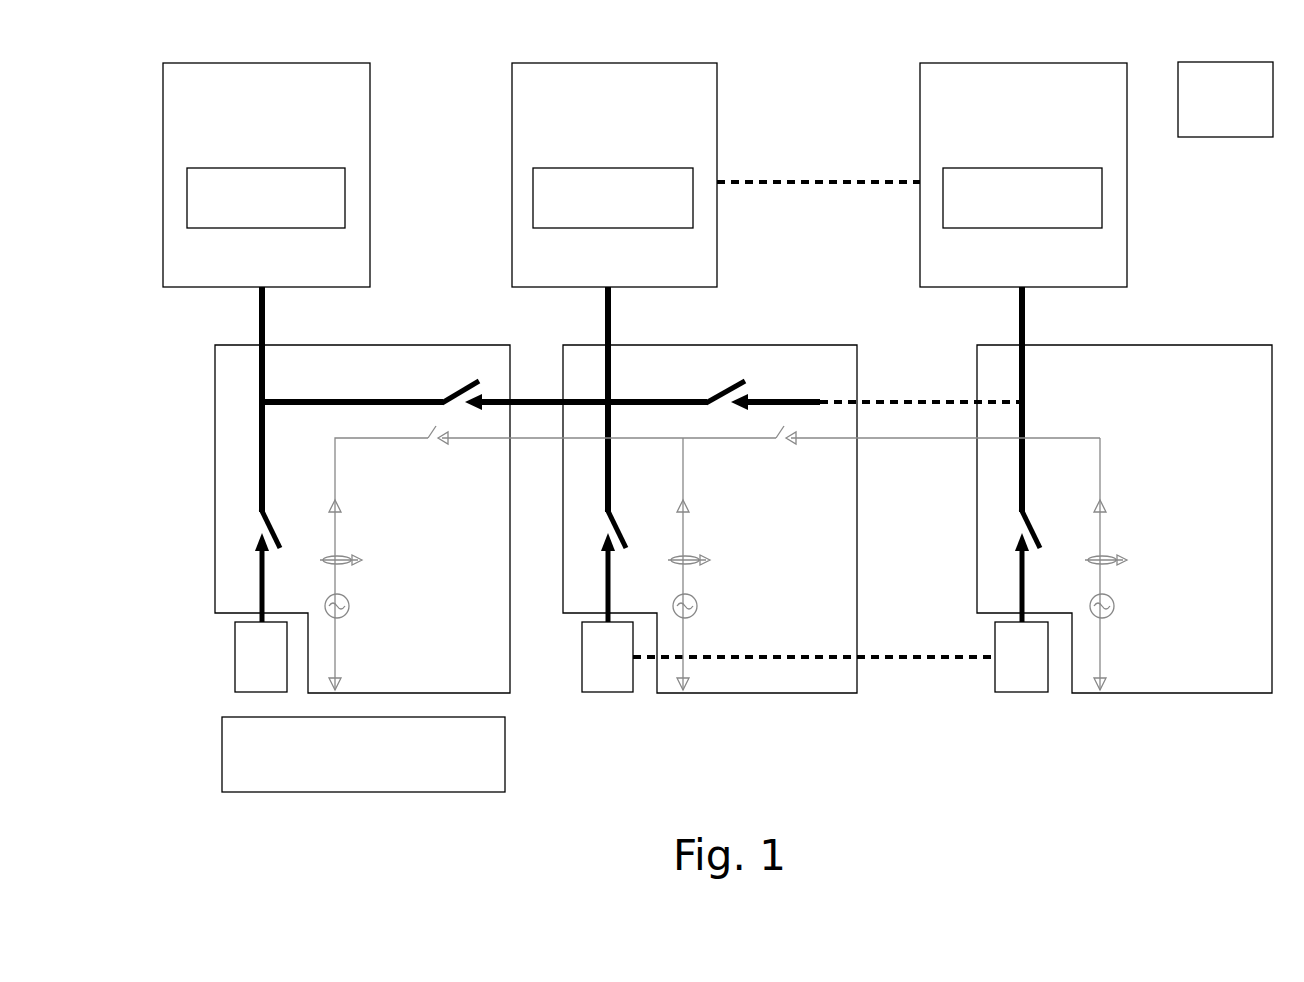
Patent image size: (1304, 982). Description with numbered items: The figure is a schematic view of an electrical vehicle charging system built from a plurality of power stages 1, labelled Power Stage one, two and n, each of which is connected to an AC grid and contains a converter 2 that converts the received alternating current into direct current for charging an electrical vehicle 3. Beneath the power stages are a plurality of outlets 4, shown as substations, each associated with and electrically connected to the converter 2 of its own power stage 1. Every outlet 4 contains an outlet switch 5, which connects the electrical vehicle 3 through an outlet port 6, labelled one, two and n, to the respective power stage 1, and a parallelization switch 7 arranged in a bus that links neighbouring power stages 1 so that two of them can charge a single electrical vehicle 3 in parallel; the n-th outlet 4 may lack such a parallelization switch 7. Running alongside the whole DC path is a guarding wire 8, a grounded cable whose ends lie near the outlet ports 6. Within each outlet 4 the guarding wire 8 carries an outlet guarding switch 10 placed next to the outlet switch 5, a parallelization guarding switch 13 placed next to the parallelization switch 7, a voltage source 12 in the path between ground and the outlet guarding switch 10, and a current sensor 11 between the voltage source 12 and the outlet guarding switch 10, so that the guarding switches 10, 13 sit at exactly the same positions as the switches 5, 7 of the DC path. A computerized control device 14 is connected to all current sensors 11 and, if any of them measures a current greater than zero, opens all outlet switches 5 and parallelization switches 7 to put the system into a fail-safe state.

The power stage 1 is at (514, 71).
The converter 2 is at (535, 187).
The electrical vehicle 3 is at (363, 754).
The outlet 4 is at (743, 519).
The outlet switch 5 is at (258, 522).
The outlet port 6 is at (238, 625).
The parallelization switch 7 is at (470, 382).
The guarding wire 8 is at (532, 440).
The outlet guarding switch 10 is at (341, 500).
The current sensor 11 is at (328, 557).
The voltage source 12 is at (349, 604).
The parallelization guarding switch 13 is at (430, 440).
The computerized control device 14 is at (1225, 99).